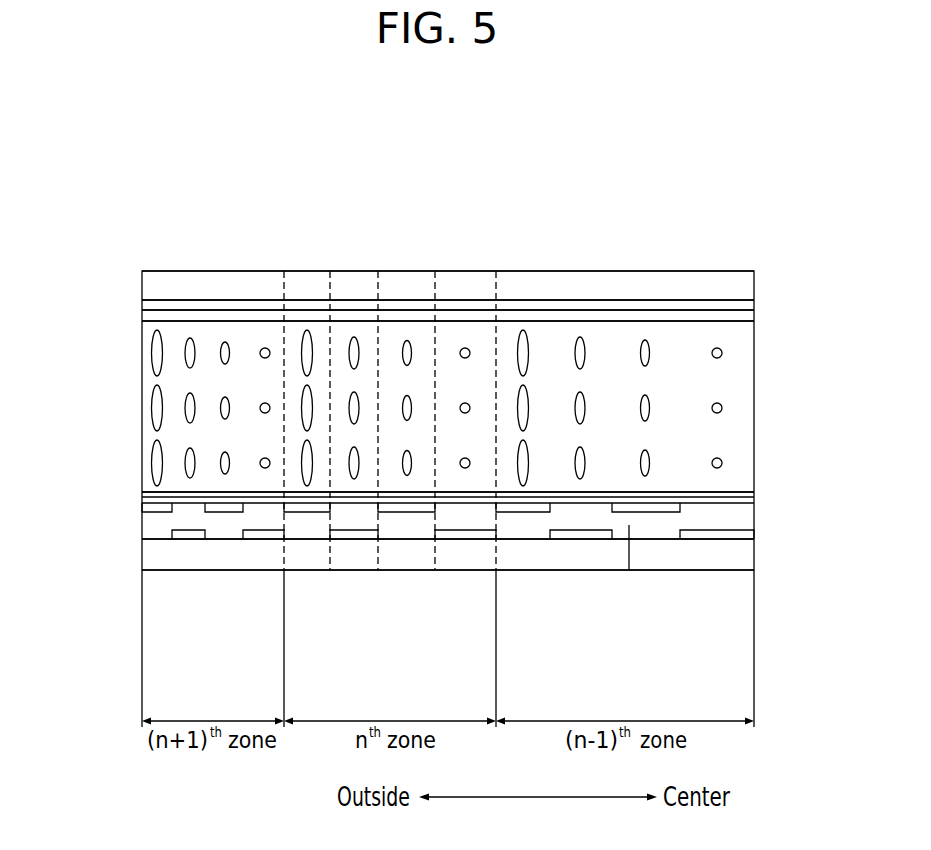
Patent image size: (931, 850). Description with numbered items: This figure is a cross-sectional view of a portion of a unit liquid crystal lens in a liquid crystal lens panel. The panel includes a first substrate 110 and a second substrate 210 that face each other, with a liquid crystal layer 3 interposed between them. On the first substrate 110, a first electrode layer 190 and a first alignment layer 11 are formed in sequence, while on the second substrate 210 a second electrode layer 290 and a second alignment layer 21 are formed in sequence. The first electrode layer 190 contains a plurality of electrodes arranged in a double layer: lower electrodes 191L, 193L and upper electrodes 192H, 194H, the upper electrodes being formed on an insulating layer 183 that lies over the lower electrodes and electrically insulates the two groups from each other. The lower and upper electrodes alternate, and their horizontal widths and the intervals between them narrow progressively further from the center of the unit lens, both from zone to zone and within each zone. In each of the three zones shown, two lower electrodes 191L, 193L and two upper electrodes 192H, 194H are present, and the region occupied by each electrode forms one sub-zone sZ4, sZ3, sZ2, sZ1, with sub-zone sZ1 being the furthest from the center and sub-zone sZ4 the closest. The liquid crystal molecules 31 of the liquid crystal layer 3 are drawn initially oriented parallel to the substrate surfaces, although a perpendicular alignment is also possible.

The second substrate 210 is at (188, 282).
The second electrode layer 290 is at (152, 305).
The second alignment layer 21 is at (152, 314).
The liquid crystal layer 3 is at (762, 323).
The liquid crystal molecules 31 is at (301, 347).
The sub-zone sZ1 is at (327, 264).
The sub-zone sZ2 is at (377, 264).
The sub-zone sZ3 is at (433, 264).
The sub-zone sZ4 is at (493, 264).
The first alignment layer 11 is at (152, 495).
The first electrode layer 190 is at (762, 503).
The upper electrode 194H is at (316, 508).
The lower electrode 193L is at (357, 535).
The upper electrode 192H is at (410, 508).
The lower electrode 191L is at (466, 535).
The insulating layer 183 is at (629, 570).
The first substrate 110 is at (206, 555).